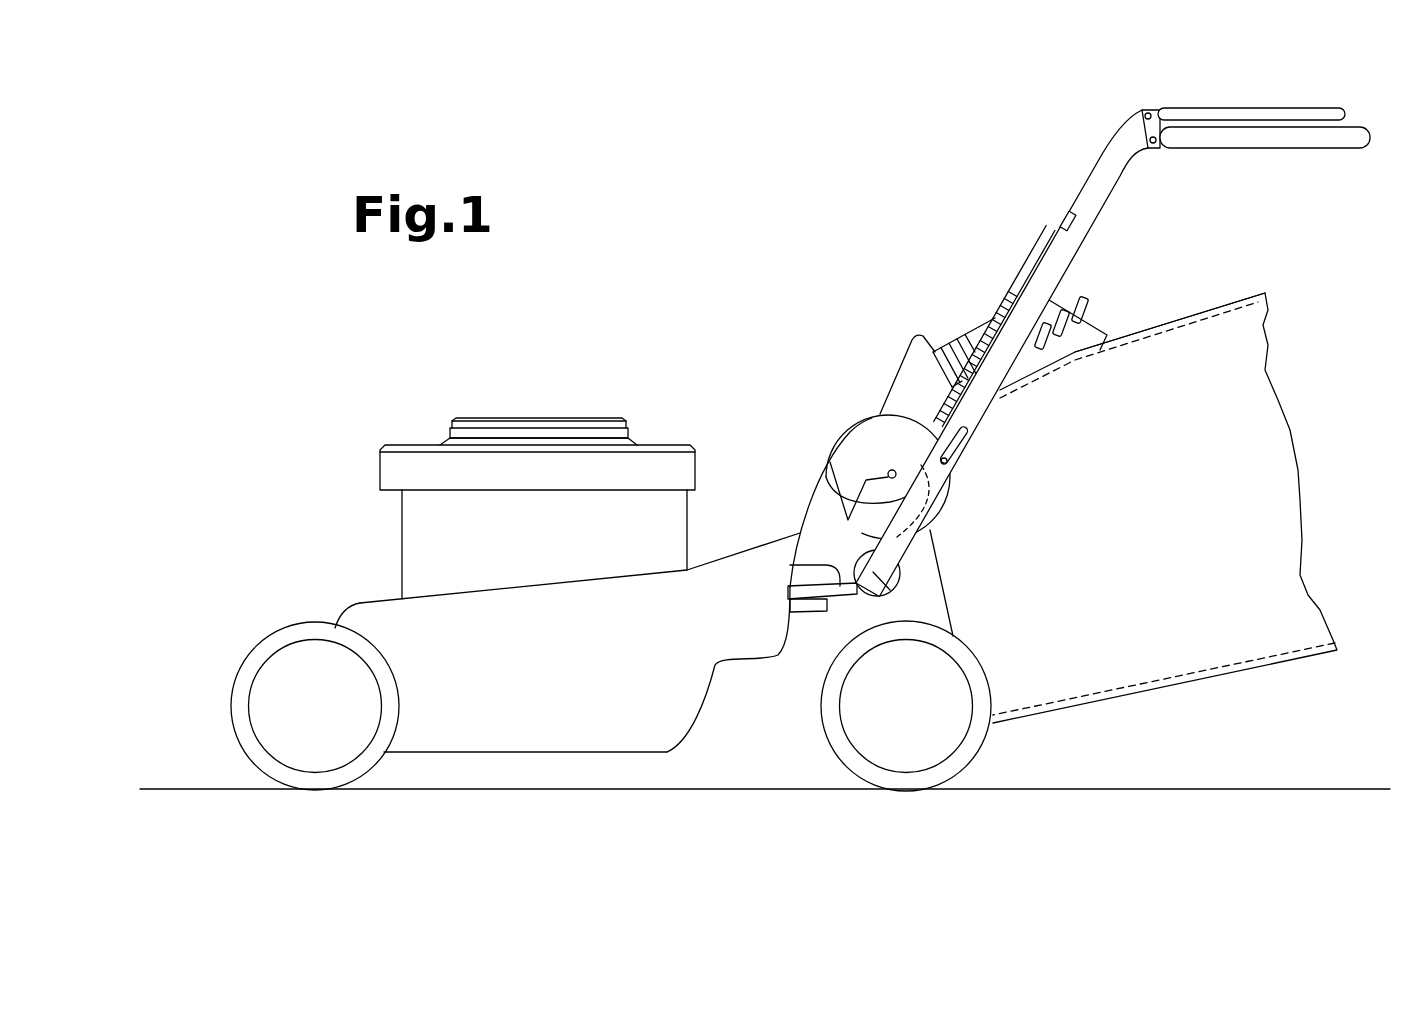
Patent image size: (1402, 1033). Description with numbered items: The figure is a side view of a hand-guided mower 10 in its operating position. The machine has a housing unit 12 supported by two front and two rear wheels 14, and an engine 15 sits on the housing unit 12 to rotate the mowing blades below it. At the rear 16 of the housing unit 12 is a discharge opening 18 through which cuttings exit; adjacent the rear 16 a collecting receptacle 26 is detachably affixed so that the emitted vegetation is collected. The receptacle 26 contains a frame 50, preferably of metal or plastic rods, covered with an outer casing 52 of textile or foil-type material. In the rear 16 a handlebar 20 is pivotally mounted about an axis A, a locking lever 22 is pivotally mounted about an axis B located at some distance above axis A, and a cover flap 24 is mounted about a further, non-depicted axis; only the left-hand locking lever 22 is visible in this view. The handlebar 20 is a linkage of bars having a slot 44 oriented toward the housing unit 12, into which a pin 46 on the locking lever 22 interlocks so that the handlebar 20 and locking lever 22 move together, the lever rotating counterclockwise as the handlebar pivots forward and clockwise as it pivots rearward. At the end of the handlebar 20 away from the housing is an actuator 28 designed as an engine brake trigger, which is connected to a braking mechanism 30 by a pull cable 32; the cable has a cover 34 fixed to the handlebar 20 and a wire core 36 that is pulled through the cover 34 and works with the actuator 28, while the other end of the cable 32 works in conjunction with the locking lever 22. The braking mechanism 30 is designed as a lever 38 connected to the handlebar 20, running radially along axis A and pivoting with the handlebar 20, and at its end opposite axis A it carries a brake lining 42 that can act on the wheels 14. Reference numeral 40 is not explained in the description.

The mower 10 is at (732, 272).
The housing unit 12 is at (480, 735).
The wheels 14 is at (296, 725).
The engine 15 is at (519, 537).
The rear 16 is at (794, 679).
The discharge opening 18 is at (922, 570).
The handlebar 20 is at (1104, 198).
The locking lever 22 is at (860, 430).
The cover flap 24 is at (1078, 313).
The collecting receptacle 26 is at (1141, 573).
The actuator 28 is at (1255, 115).
The braking mechanism 30 is at (788, 612).
The pull cable 32 is at (1004, 202).
The cover 34 is at (1010, 288).
The core 36 is at (1093, 162).
The lever 38 is at (805, 600).
The discharge direction 40 is at (817, 630).
The brake lining 42 is at (805, 602).
The slot 44 is at (968, 435).
The pin 46 is at (950, 465).
The frame 50 is at (1228, 295).
The outer casing 52 is at (1238, 468).
The axis A is at (895, 597).
The axis B is at (835, 493).